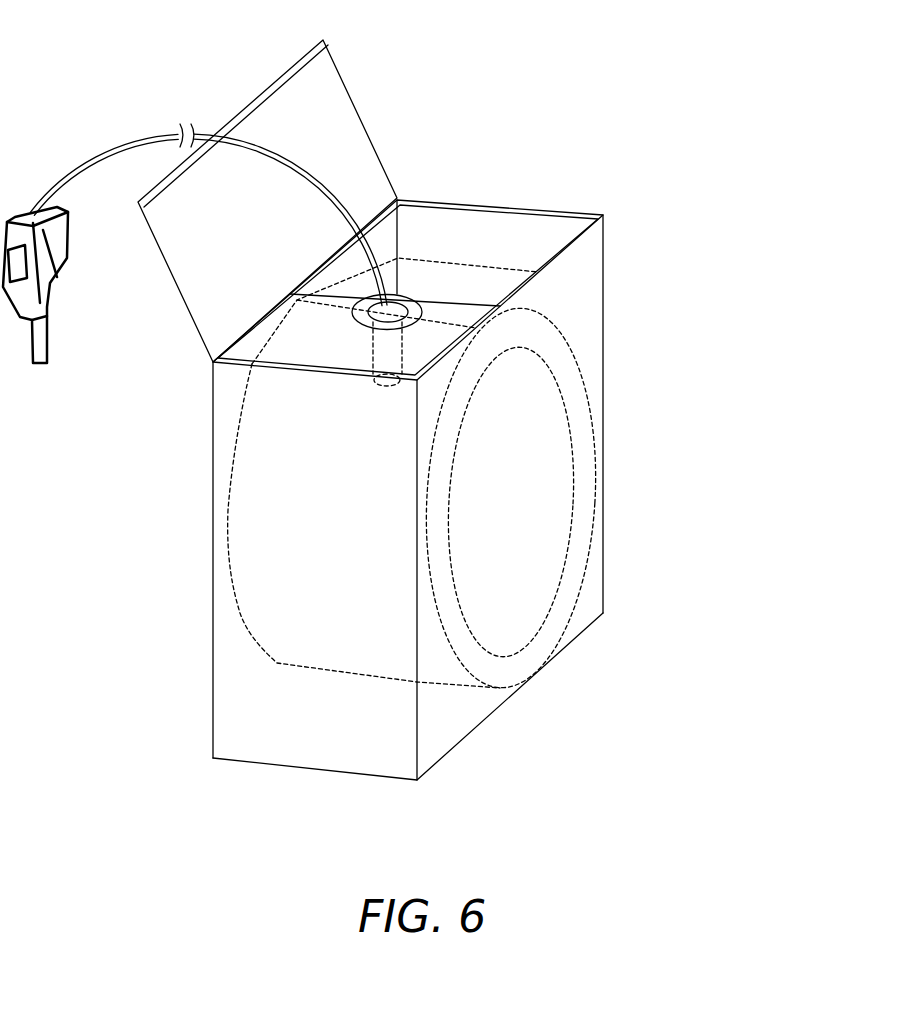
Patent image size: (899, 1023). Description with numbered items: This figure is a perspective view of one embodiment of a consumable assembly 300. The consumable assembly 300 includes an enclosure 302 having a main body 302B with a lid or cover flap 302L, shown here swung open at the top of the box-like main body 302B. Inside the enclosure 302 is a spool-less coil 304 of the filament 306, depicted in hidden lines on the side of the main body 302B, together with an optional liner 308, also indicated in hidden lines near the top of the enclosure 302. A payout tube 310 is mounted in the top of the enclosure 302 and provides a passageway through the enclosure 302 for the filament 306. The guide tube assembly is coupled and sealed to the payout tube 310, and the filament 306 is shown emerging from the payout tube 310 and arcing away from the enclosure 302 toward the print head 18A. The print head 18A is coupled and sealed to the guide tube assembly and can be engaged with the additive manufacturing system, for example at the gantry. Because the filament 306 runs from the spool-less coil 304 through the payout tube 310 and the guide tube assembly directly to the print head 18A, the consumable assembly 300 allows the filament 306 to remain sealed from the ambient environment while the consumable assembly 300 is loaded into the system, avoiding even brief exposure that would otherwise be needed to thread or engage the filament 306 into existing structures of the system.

The consumable assembly 300 is at (746, 342).
The enclosure 302 is at (190, 503).
The lid or cover flap 302L is at (338, 130).
The main body 302B is at (213, 670).
The spool-less coil 304 is at (582, 427).
The filament 306 is at (200, 128).
The liner 308 is at (455, 258).
The payout tube 310 is at (363, 315).
The print head 18A is at (50, 277).